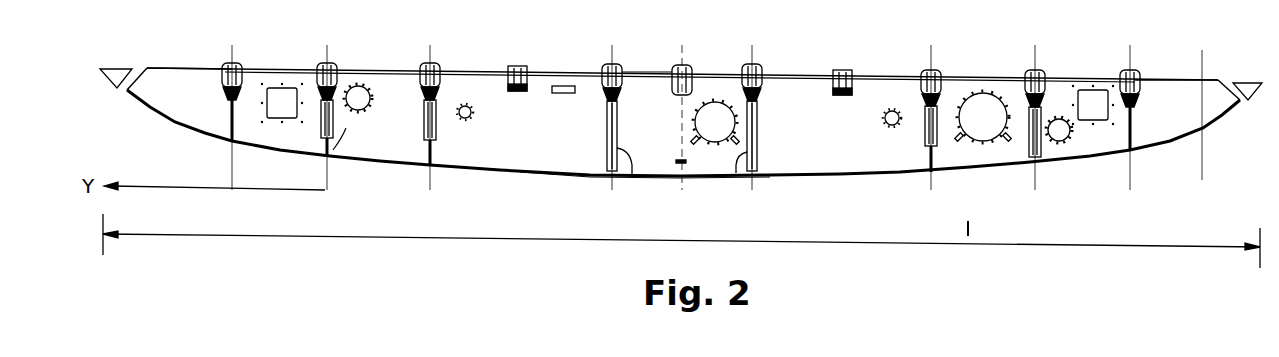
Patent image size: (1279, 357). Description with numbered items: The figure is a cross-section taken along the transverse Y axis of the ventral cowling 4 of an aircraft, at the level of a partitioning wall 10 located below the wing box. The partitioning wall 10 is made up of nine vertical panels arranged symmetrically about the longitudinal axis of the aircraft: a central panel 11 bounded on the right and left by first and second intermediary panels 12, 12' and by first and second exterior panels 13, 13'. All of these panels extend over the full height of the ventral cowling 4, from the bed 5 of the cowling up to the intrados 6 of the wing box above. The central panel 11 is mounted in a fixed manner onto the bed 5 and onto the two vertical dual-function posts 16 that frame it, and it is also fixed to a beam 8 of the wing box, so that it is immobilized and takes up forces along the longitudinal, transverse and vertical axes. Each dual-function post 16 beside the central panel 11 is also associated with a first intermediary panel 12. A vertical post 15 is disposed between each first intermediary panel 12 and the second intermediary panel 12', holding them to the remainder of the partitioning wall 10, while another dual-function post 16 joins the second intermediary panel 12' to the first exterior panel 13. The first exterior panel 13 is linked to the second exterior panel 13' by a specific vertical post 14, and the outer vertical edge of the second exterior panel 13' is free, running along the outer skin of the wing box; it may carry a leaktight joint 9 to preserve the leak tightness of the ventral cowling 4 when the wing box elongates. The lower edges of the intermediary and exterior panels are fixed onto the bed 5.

The ventral cowling 4 is at (1080, 200).
The bed 5 is at (530, 172).
The intrados 6 is at (355, 70).
The beam 8 is at (432, 68).
The leaktight joint 9 is at (105, 78).
The partitioning wall 10 is at (800, 40).
The central panel 11 is at (650, 90).
The first intermediary panel 12 is at (703, 55).
The second intermediary panel 12' is at (708, 82).
The first exterior panel 13 is at (687, 69).
The second exterior panel 13' is at (679, 61).
The specific vertical post 14 is at (228, 126).
The vertical post 15 is at (426, 160).
The vertical dual-function post 16 is at (340, 141).